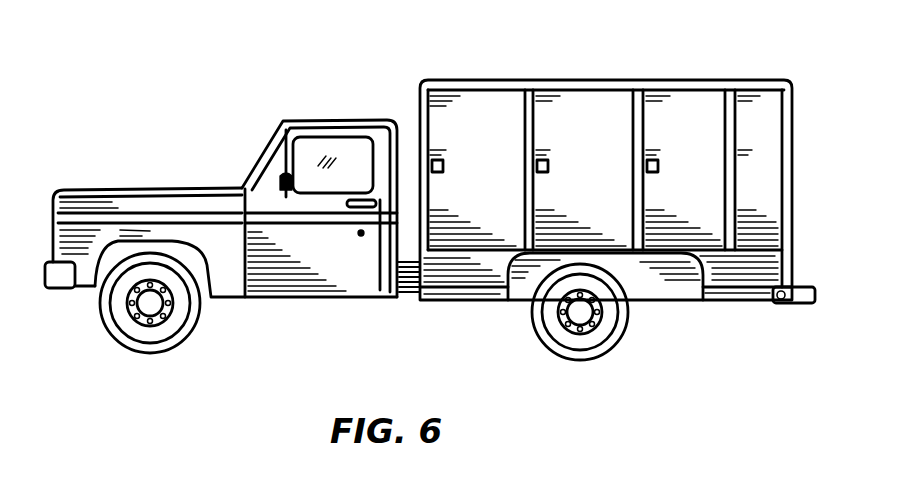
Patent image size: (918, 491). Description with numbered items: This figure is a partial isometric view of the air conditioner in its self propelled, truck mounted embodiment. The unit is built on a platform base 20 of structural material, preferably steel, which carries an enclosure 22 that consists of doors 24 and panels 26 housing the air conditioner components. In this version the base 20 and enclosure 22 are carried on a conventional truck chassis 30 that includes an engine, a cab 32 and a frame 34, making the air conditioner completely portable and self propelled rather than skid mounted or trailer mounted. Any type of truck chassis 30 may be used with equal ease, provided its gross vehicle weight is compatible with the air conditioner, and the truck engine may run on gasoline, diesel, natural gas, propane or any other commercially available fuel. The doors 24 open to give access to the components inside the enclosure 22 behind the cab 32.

The platform base 20 is at (505, 300).
The enclosure 22 is at (547, 83).
The doors 24 is at (487, 100).
The panels 26 is at (748, 250).
The truck chassis 30 is at (138, 186).
The cab 32 is at (313, 118).
The frame 34 is at (405, 298).